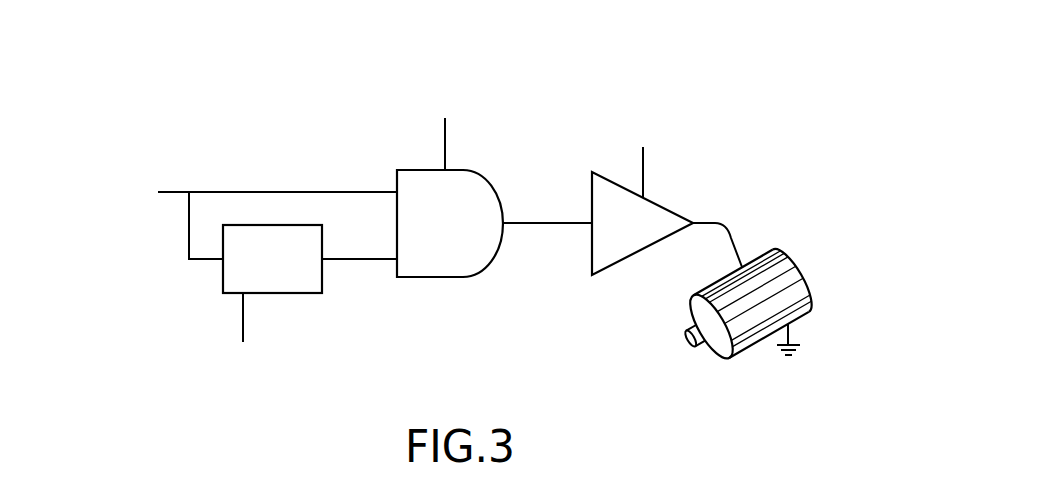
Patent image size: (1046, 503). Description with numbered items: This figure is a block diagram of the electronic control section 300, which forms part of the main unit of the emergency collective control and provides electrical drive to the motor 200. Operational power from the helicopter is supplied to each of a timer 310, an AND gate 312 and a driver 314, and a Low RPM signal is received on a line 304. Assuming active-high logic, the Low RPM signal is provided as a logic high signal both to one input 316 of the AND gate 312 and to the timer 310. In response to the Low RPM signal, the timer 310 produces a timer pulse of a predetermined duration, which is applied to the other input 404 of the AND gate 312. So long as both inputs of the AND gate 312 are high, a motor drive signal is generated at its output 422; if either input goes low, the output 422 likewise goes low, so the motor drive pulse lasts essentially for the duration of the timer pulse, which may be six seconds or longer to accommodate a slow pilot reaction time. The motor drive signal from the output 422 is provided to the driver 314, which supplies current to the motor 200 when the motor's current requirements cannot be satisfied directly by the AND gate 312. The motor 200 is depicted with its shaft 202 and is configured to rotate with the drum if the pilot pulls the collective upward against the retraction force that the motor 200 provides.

The electronic control section 300 is at (702, 78).
The line 304 is at (175, 191).
The timer 310 is at (296, 293).
The input 404 is at (397, 262).
The input 316 is at (397, 191).
The AND gate 312 is at (455, 277).
The output 422 is at (545, 223).
The driver 314 is at (633, 260).
The motor 200 is at (760, 256).
The motor shaft 202 is at (697, 350).